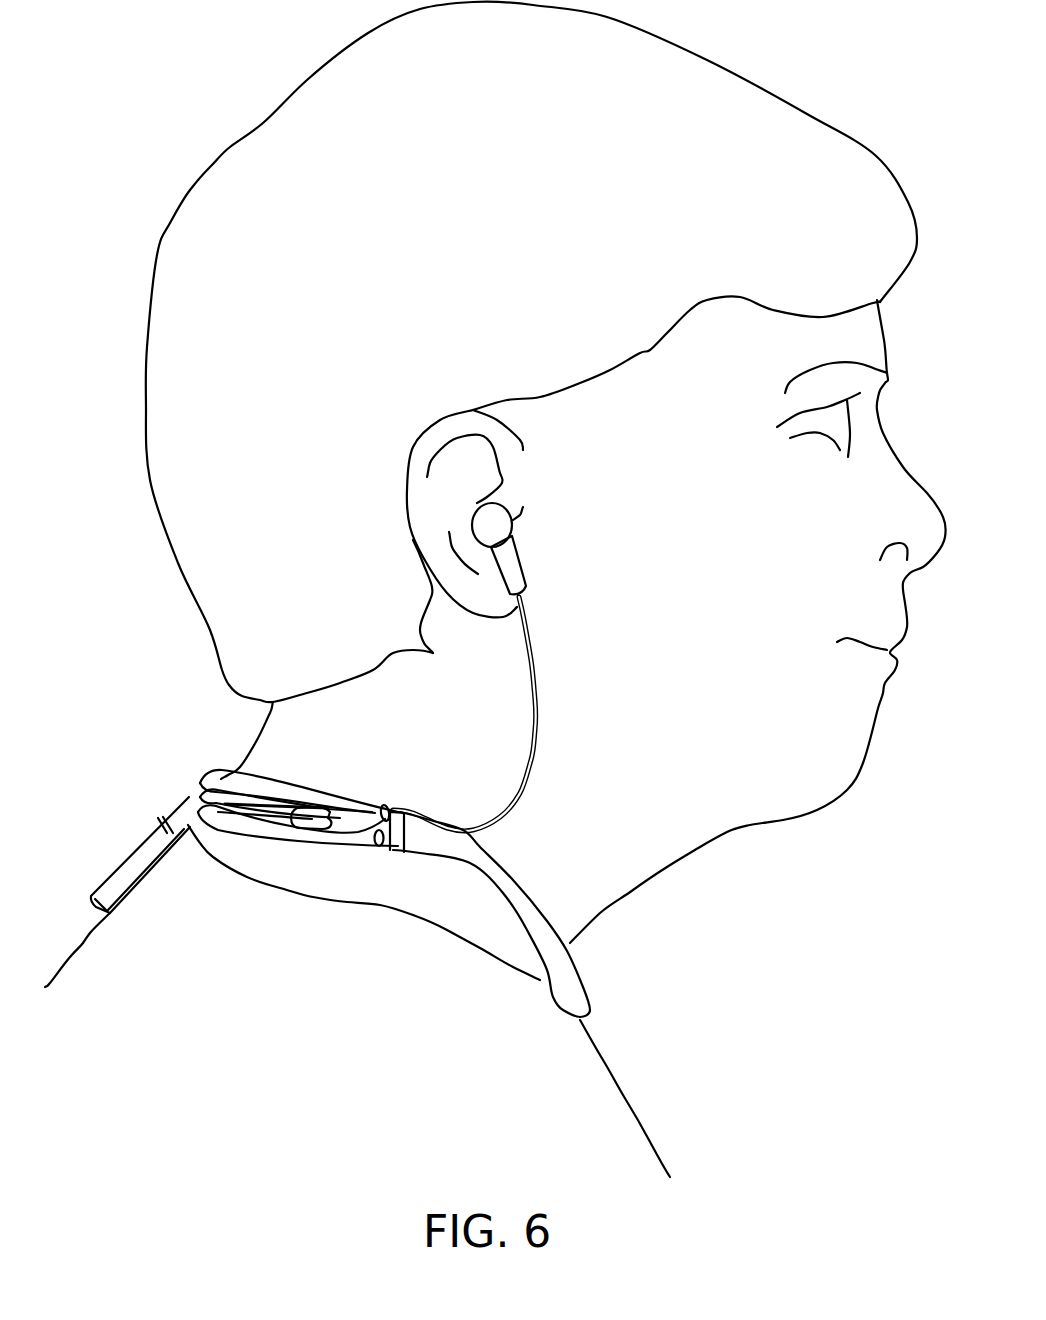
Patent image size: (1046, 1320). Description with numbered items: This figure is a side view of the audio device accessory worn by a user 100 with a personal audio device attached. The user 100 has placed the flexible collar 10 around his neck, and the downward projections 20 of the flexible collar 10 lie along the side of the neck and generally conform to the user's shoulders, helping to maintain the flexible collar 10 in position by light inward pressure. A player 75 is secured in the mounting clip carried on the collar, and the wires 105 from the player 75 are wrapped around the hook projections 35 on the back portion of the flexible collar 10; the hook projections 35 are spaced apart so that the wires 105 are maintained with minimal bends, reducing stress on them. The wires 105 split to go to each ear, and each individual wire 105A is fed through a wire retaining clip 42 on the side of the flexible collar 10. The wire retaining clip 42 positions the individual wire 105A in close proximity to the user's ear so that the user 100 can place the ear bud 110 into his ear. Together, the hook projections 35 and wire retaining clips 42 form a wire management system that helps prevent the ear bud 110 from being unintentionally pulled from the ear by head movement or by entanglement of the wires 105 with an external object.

The user 100 is at (358, 1042).
The flexible collar 10 is at (405, 791).
The downward projection 20 is at (585, 989).
The hook projection 35 is at (309, 818).
The wire retaining clip 42 is at (379, 846).
The player 75 is at (129, 844).
The wires 105 is at (206, 768).
The individual wire 105A is at (537, 700).
The ear bud 110 is at (506, 536).